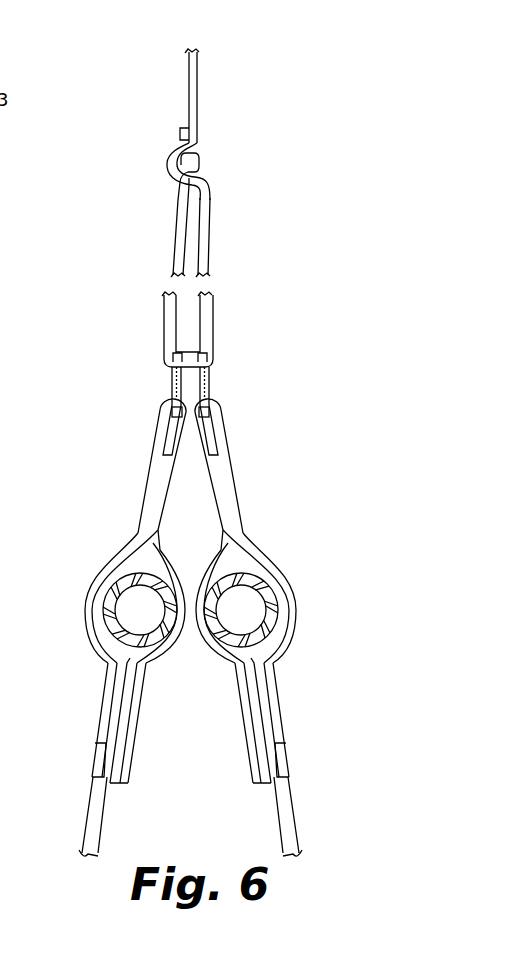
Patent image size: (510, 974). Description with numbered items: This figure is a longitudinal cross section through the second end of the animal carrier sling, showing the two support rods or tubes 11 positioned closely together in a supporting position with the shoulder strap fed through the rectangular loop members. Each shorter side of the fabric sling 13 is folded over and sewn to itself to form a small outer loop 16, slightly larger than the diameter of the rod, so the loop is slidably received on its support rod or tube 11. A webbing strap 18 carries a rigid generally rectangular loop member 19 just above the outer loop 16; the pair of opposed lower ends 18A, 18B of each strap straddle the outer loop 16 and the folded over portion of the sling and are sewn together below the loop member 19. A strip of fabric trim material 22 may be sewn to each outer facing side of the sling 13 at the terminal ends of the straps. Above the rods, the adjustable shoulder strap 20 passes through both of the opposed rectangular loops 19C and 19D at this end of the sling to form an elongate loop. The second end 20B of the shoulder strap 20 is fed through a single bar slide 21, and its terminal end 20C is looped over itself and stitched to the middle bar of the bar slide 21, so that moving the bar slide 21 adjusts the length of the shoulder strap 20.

The adjustable shoulder strap 20 is at (198, 88).
The single bar slide 21 is at (180, 133).
The second end of the shoulder strap 20B is at (176, 247).
The terminal end of the second end of the shoulder strap 20C is at (205, 220).
The rigid generally rectangular loop member 19 is at (187, 329).
The rectangular loop 19C is at (170, 380).
The rectangular loop 19D is at (207, 382).
The webbing strap 18 is at (157, 460).
The small outer loop 16 is at (138, 568).
The support rod or tube 11 is at (107, 598).
The lower end of the strap 18A is at (107, 692).
The lower end of the strap 18B is at (130, 728).
The strip of fabric trim material 22 is at (92, 760).
The fabric sling 13 is at (92, 813).